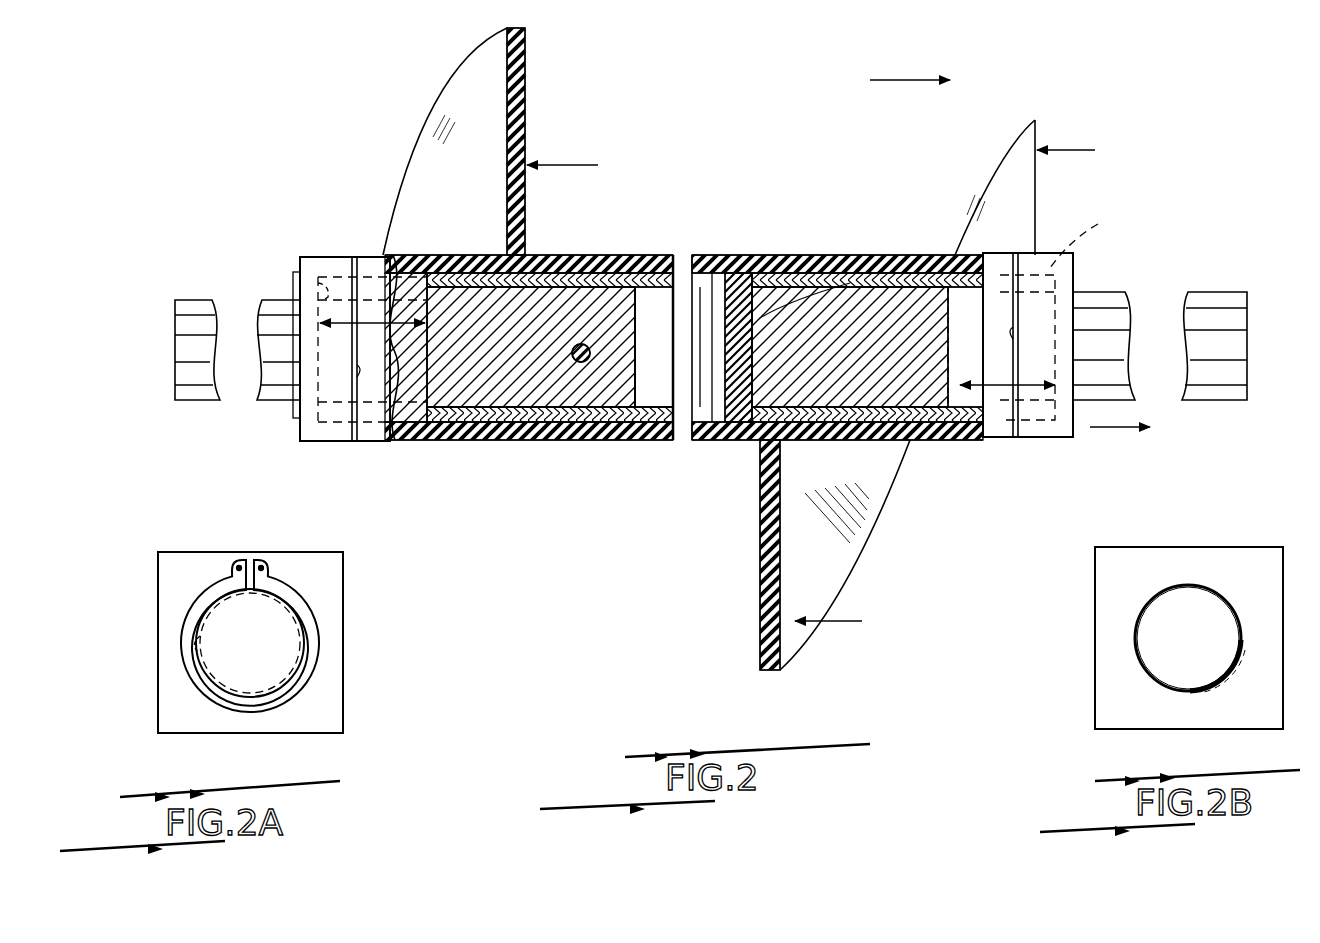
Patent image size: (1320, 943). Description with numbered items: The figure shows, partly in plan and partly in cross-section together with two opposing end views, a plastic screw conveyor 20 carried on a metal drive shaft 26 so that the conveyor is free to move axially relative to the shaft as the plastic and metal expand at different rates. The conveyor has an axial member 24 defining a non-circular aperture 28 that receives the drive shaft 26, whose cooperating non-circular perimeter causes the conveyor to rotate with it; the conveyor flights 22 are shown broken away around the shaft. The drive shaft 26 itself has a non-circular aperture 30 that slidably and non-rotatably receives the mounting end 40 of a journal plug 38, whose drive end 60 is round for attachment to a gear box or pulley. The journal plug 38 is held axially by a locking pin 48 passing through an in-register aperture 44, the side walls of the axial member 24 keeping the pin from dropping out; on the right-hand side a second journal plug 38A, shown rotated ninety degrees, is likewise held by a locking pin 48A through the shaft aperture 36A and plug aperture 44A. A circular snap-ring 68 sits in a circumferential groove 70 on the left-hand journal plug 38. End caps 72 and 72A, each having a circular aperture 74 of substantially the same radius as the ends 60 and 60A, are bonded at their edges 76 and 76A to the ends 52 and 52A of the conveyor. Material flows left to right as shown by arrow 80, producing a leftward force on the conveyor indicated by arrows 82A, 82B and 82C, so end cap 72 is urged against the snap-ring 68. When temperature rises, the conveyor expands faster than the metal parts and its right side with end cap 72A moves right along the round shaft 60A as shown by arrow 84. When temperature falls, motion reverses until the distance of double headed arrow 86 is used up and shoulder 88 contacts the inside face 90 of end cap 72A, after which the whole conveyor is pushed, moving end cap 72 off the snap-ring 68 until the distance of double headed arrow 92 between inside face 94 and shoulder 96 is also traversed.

In FIG. 2, the plastic screw conveyor 20 is at (546, 86).
In FIG. 2, the vane 22 is at (455, 105).
In FIG. 2, the axial member 24 is at (590, 256).
In FIG. 2, the drive shaft 26 is at (665, 256).
In FIG. 2, the aperture 28 is at (418, 441).
In FIG. 2, the non-circular aperture 30 is at (668, 394).
In FIG. 2, the second tube wall 36A is at (780, 258).
In FIG. 2, the journal plug 38 is at (445, 385).
In FIG. 2, the journal plug 38A is at (890, 258).
In FIG. 2, the mounting end 40 is at (530, 418).
In FIG. 2, the aperture 44 is at (588, 344).
In FIG. 2, the passage 44A is at (845, 258).
In FIG. 2, the locking pin 48 is at (573, 441).
In FIG. 2, the locking pin 48A is at (728, 441).
In FIG. 2, the end 52 is at (355, 258).
In FIG. 2, the end 52A is at (1018, 440).
In FIG. 2, the drive end 60 is at (196, 405).
In FIG. 2A, the drive end 60 is at (290, 637).
In FIG. 2, the round shaft 60A is at (1115, 292).
In FIG. 2B, the round shaft 60A is at (1150, 640).
In FIG. 2, the snap-ring 68 is at (291, 425).
In FIG. 2A, the snap-ring 68 is at (300, 672).
In FIG. 2A, the circumferential groove 70 is at (195, 660).
In FIG. 2, the end cap 72 is at (312, 443).
In FIG. 2A, the end cap 72 is at (333, 585).
In FIG. 2, the end cap 72A is at (1060, 440).
In FIG. 2B, the end cap 72A is at (1100, 705).
In FIG. 2B, the circular aperture 74 is at (1215, 585).
In FIG. 2, the edge 76 is at (345, 443).
In FIG. 2, the edge 76A is at (1012, 337).
In FIG. 2, the arrow 80 is at (920, 82).
In FIG. 2, the arrow 82A is at (577, 165).
In FIG. 2, the arrow 82B is at (836, 622).
In FIG. 2, the arrow 82C is at (1072, 150).
In FIG. 2, the arrow 84 is at (1120, 433).
In FIG. 2, the double headed arrow 86 is at (990, 384).
In FIG. 2, the shoulder 88 is at (940, 258).
In FIG. 2, the inside face 90 is at (1086, 235).
In FIG. 2, the double headed arrow 92 is at (338, 258).
In FIG. 2, the inside face 94 is at (318, 270).
In FIG. 2, the shoulder 96 is at (386, 258).